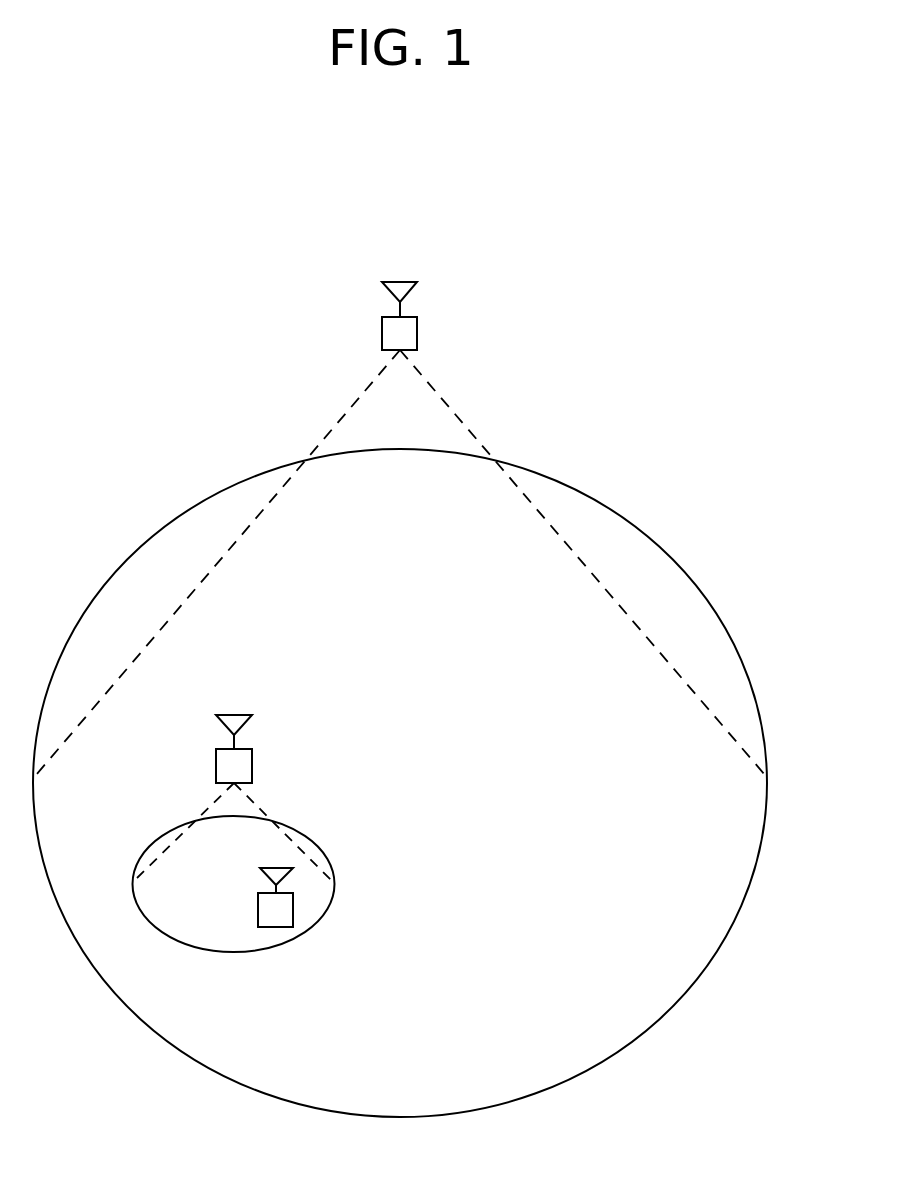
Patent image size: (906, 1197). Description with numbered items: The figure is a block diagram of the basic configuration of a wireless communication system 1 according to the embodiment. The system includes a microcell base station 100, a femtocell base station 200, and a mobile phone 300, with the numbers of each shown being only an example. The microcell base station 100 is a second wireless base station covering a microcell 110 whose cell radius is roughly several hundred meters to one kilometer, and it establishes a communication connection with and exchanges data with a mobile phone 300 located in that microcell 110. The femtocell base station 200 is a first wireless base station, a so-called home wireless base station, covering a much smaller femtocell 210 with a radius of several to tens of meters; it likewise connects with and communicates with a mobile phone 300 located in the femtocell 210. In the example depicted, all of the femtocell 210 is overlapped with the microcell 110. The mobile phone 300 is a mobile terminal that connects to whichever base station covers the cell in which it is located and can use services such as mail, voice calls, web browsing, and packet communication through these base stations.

The wireless communication system 1 is at (412, 202).
The microcell base station 100 is at (380, 334).
The microcell 110 is at (539, 498).
The femtocell base station 200 is at (213, 773).
The femtocell 210 is at (175, 938).
The mobile phone 300 is at (288, 925).